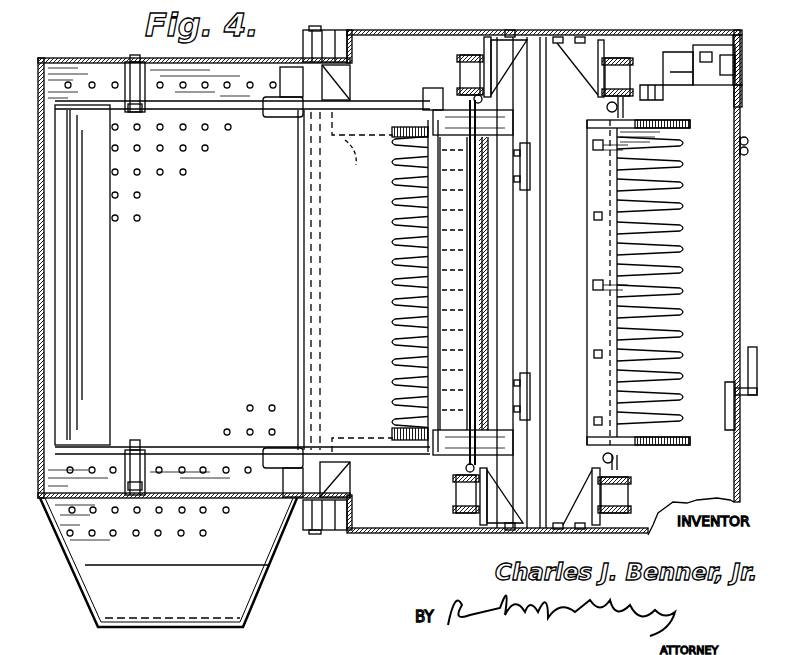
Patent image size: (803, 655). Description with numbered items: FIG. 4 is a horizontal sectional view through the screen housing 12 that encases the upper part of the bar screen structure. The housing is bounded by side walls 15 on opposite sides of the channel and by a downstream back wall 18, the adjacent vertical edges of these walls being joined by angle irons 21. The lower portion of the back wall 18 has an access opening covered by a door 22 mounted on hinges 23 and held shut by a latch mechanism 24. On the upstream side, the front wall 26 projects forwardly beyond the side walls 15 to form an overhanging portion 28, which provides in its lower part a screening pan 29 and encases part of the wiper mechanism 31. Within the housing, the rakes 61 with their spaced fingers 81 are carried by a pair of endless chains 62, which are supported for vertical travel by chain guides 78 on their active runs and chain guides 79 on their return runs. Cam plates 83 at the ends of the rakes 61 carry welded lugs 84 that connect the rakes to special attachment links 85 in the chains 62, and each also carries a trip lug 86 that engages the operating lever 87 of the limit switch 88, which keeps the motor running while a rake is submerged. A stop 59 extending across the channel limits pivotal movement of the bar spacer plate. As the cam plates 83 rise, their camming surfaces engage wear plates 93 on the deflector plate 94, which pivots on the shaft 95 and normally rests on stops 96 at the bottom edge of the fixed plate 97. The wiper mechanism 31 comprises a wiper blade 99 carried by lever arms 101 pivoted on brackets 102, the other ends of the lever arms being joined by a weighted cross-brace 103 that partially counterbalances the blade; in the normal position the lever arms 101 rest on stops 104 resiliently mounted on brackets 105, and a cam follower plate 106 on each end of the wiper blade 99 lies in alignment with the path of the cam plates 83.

The screen housing 12 is at (450, 32).
The side walls 15 is at (647, 33).
The overhanging portion 28 is at (38, 302).
The door 22 is at (740, 200).
The angle irons 21 is at (742, 52).
The back wall 18 is at (741, 92).
The hinges 23 is at (747, 145).
The latch mechanism 24 is at (748, 397).
The screening pan 29 is at (85, 558).
The weighted cross-brace 103 is at (107, 330).
The wiper mechanism 31 is at (168, 447).
The lever arms 101 is at (248, 112).
The brackets 102 is at (130, 78).
The stops 104 is at (285, 117).
The shaft 95 is at (303, 68).
The front wall 26 is at (350, 62).
The deflector plate 94 is at (330, 283).
The brackets 105 is at (320, 140).
The wear plates 93 is at (362, 282).
The cam plates 83 is at (395, 132).
The rakes 61 is at (388, 331).
The fingers 81 is at (390, 263).
The wiper blade 99 is at (478, 303).
The stops 96 is at (518, 380).
The fixed plate 97 is at (541, 331).
The stop 59 is at (551, 212).
The cam follower plate 106 is at (513, 130).
The trip lug 86 is at (423, 95).
The attachment links 85 is at (462, 100).
The lugs 84 is at (485, 98).
The chain guides 78 is at (484, 45).
The chain guides 79 is at (598, 70).
The endless chains 62 is at (630, 79).
The operating lever 87 is at (668, 85).
The limit switch 88 is at (700, 50).